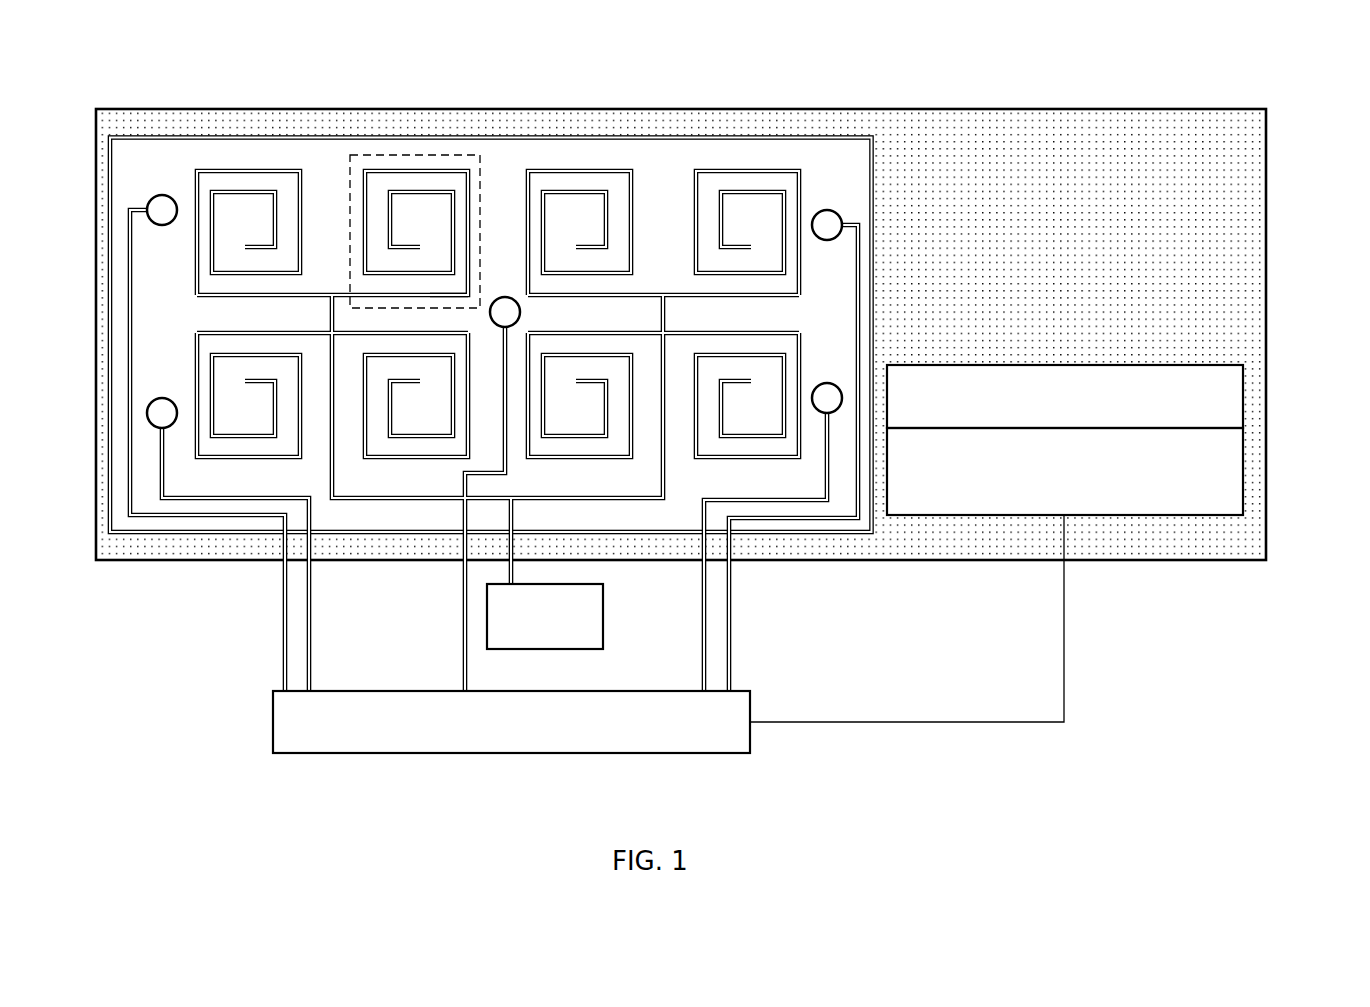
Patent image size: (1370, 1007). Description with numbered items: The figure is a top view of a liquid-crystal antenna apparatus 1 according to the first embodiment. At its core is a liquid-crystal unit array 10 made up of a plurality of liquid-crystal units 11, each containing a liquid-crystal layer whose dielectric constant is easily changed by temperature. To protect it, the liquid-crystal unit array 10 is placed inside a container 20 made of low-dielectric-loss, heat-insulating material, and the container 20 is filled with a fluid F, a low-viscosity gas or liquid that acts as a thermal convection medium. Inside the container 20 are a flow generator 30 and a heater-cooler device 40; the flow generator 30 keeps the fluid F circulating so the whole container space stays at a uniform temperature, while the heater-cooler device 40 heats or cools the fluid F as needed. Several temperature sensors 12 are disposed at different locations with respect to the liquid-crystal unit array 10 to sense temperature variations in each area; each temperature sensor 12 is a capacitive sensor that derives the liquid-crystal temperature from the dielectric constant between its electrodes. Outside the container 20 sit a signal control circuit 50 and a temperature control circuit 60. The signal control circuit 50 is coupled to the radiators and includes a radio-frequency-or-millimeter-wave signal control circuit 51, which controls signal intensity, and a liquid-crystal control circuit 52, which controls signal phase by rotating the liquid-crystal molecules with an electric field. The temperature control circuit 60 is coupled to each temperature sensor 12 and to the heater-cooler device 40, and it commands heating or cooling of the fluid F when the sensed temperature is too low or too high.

The liquid-crystal antenna apparatus 1 is at (1310, 97).
The liquid-crystal unit array 10 is at (661, 137).
The liquid-crystal unit 11 is at (412, 155).
The temperature sensor 12 is at (822, 212).
The container 20 is at (1202, 108).
The fluid F is at (1063, 153).
The flow generator 30 is at (1203, 397).
The heater-cooler device 40 is at (1203, 472).
The signal control circuit 50 is at (512, 630).
The radio-frequency-or-millimeter-wave signal control circuit 51 is at (545, 616).
The liquid-crystal control circuit 52 is at (545, 616).
The temperature control circuit 60 is at (303, 723).